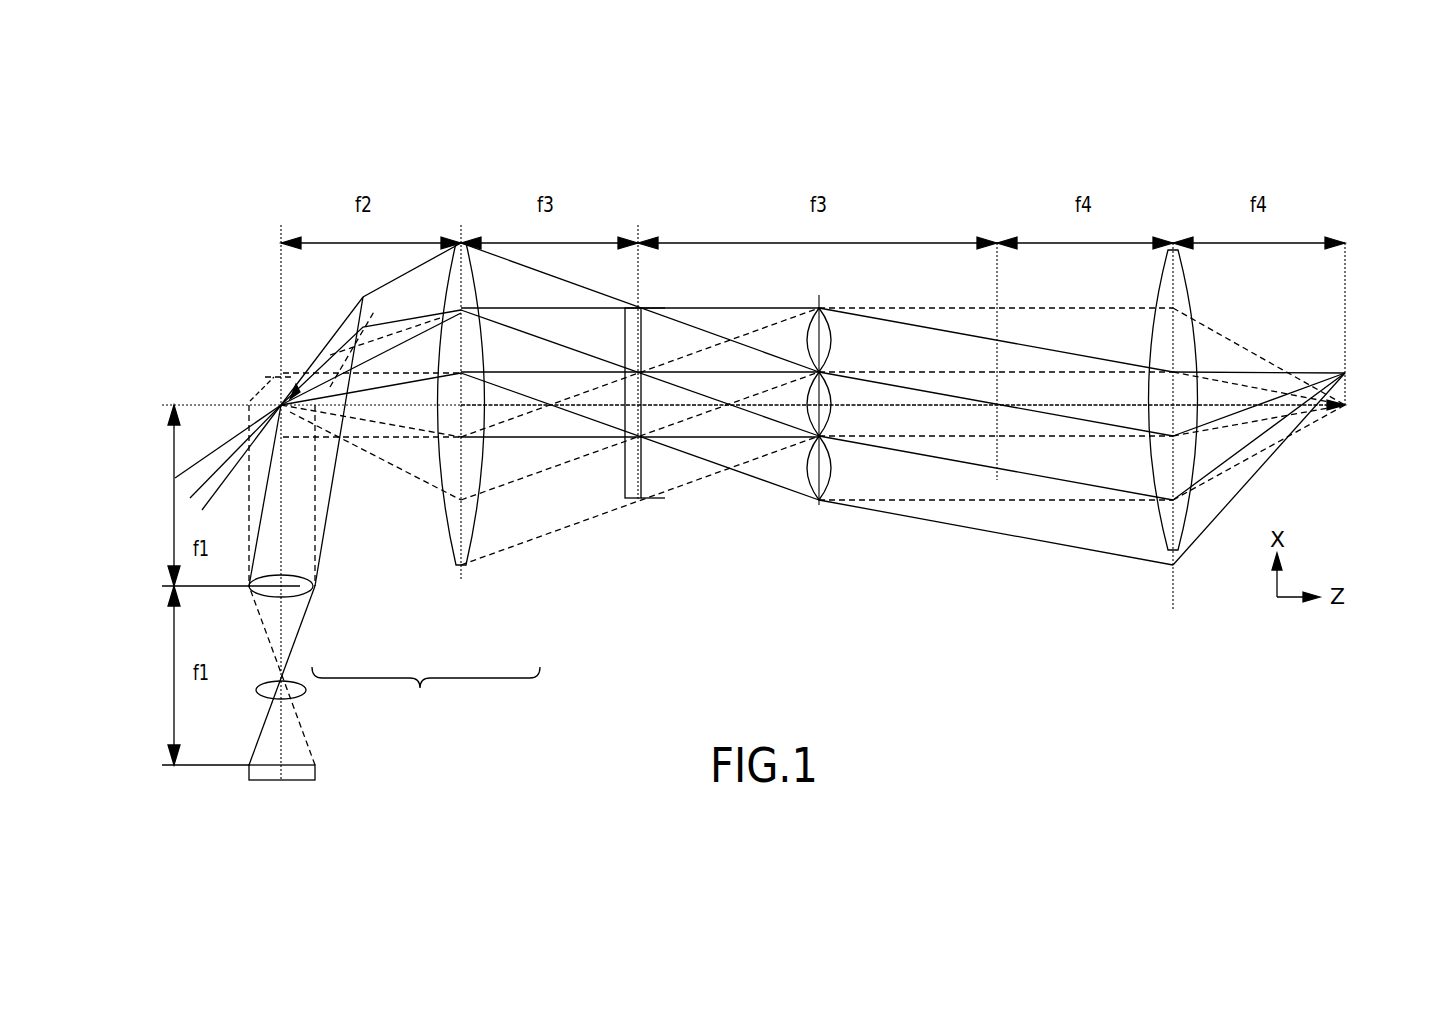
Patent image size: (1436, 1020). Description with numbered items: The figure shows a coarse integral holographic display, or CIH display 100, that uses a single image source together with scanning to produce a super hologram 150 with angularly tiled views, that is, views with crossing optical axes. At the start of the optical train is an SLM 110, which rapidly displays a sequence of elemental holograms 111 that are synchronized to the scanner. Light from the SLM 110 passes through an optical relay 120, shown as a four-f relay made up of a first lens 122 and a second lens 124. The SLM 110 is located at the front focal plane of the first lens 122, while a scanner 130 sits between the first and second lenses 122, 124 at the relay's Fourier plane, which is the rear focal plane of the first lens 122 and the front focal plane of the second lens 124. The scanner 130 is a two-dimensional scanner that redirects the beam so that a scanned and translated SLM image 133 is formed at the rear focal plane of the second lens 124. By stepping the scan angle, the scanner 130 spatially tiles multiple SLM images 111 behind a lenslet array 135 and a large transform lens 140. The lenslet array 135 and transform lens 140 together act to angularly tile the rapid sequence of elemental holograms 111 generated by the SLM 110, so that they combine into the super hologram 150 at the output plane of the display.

The CIH display 100 is at (262, 207).
The SLM 110 is at (327, 778).
The elemental holograms 111 is at (260, 698).
The optical relay 120 is at (426, 690).
The first lens 122 is at (326, 591).
The second lens 124 is at (484, 570).
The scanner 130 is at (257, 368).
The scanned and translated SLM image 133 is at (640, 520).
The lenslet array 135 is at (790, 507).
The transform lens 140 is at (1138, 570).
The super hologram 150 is at (1331, 432).